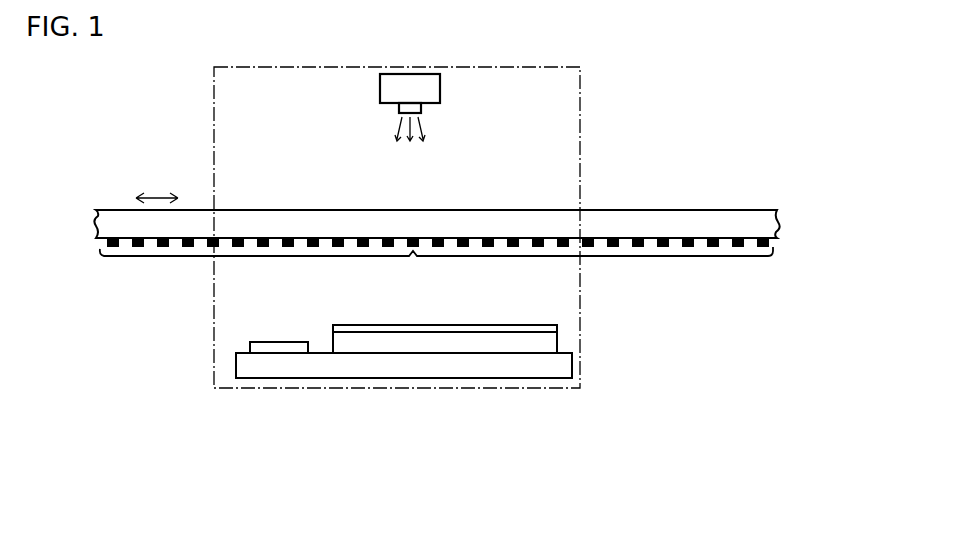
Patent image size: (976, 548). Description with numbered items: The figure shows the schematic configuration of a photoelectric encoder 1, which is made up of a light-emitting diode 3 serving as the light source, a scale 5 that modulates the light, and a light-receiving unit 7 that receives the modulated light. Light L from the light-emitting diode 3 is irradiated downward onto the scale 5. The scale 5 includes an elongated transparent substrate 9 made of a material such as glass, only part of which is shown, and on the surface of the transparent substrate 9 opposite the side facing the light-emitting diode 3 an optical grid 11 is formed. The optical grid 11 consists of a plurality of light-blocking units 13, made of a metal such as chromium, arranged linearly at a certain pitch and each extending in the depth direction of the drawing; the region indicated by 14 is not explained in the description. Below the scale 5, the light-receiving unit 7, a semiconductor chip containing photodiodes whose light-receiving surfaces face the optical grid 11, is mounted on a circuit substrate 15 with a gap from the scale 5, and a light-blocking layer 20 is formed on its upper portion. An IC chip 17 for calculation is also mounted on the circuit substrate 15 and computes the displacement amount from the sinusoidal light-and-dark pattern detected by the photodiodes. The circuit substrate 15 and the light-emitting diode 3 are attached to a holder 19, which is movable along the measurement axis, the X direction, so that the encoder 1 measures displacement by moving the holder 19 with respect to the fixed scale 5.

The photoelectric encoder 1 is at (709, 96).
The light-emitting diode 3 is at (440, 88).
The scale 5 is at (808, 194).
The light-receiving unit 7 is at (557, 343).
The transparent substrate 9 is at (780, 226).
The optical grid 11 is at (436, 270).
The light-blocking units 13 is at (772, 245).
The bonding layer 14 is at (750, 247).
The circuit substrate 15 is at (572, 367).
The IC chip 17 is at (250, 348).
The holder 19 is at (214, 96).
The light-blocking layer 20 is at (557, 328).
The light L is at (397, 123).
The X direction X is at (157, 197).